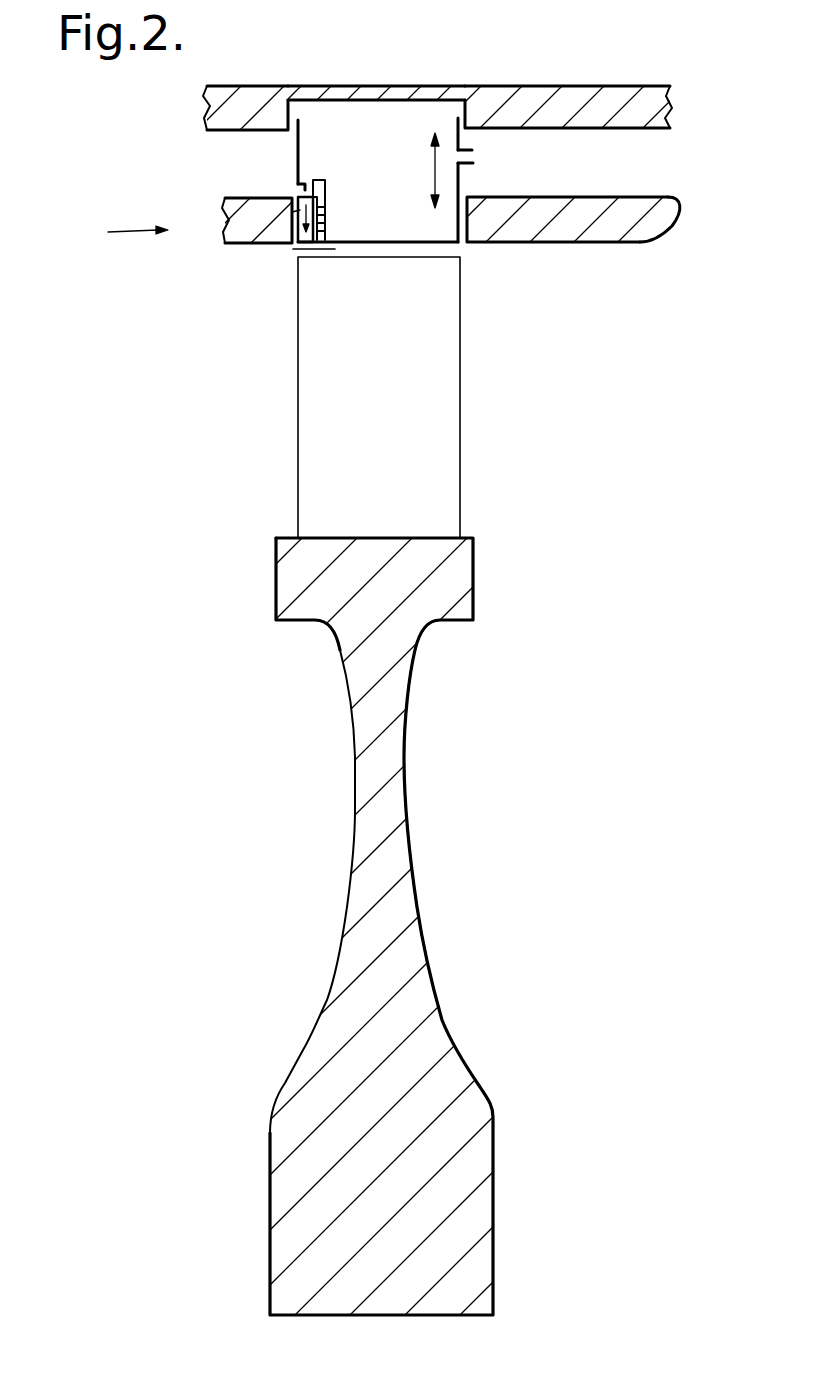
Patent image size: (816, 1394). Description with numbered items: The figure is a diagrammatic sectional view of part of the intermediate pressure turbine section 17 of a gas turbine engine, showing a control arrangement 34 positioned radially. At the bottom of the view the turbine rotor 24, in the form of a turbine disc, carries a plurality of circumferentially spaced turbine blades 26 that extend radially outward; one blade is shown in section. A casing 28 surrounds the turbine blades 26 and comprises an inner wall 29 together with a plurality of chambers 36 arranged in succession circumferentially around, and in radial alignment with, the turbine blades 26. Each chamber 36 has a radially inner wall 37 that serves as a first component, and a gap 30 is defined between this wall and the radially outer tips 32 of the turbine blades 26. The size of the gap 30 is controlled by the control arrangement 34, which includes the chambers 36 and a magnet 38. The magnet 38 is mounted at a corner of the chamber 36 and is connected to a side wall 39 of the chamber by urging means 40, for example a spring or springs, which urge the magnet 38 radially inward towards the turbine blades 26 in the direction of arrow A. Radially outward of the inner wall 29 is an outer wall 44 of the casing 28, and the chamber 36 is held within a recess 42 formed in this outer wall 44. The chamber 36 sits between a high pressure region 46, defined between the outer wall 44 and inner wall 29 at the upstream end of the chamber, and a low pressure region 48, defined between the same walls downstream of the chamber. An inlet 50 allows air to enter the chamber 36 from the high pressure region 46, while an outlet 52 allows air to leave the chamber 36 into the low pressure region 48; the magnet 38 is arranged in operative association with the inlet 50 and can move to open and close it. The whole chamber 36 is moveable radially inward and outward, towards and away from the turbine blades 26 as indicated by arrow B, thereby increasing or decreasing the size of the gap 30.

The intermediate pressure turbine section 17 is at (120, 230).
The turbine rotor 24 is at (413, 890).
The turbine blades 26 is at (462, 445).
The casing 28 is at (518, 252).
The inner wall 29 is at (650, 244).
The gap 30 is at (293, 249).
The radially outer tips 32 is at (327, 260).
The control arrangement 34 is at (276, 149).
The chamber 36 is at (405, 125).
The radially inner wall 37 is at (387, 242).
The magnet 38 is at (327, 217).
The side wall 39 is at (337, 243).
The urging means 40 is at (322, 195).
The recess 42 is at (311, 101).
The outer wall 44 is at (517, 103).
The high pressure region 46 is at (252, 163).
The low pressure region 48 is at (547, 158).
The inlet 50 is at (293, 187).
The outlet 52 is at (468, 167).
The arrow A is at (262, 243).
The arrow B is at (433, 168).